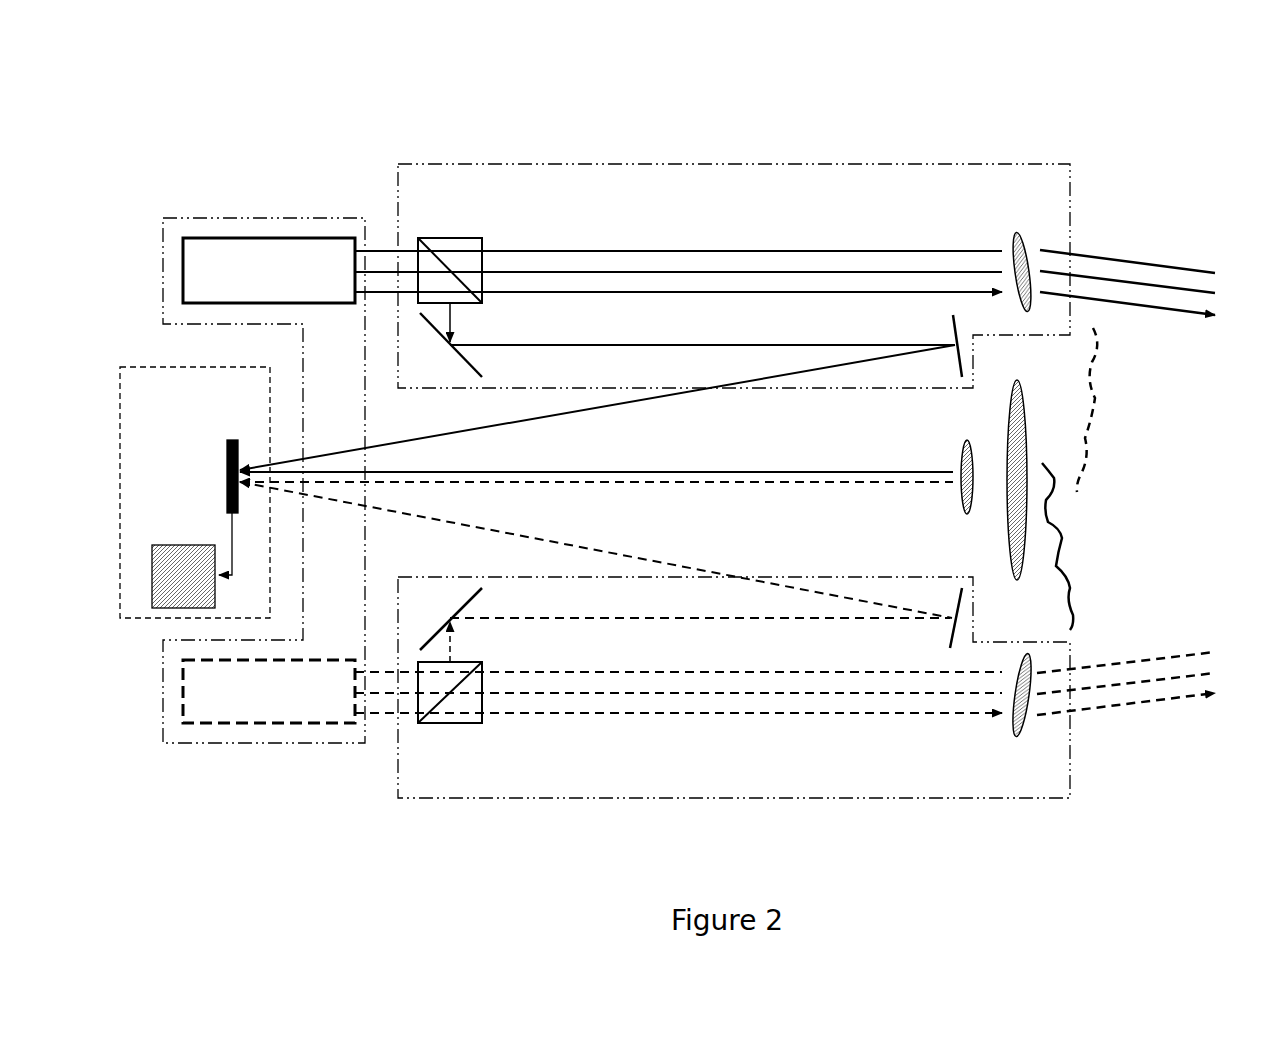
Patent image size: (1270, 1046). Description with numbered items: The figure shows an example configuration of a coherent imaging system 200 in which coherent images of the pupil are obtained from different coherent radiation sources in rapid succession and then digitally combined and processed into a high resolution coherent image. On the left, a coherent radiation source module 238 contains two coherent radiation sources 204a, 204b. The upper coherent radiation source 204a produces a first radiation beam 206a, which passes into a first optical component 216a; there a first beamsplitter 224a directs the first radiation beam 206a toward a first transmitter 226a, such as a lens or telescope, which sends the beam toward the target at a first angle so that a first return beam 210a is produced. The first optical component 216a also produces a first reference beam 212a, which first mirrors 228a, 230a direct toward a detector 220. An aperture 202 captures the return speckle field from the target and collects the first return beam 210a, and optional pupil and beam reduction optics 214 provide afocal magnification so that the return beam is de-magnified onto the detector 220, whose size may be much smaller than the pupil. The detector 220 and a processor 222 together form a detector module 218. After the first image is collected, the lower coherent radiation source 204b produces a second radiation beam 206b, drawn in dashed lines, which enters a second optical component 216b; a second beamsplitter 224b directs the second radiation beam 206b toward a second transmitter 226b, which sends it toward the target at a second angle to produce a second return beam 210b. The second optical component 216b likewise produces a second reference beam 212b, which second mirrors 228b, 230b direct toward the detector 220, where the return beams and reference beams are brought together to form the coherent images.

The coherent imaging system 200 is at (954, 131).
The aperture 202 is at (1017, 580).
The coherent radiation source 204a is at (269, 270).
The coherent radiation source 204b is at (269, 691).
The first radiation beam 206a is at (718, 248).
The second radiation beam 206b is at (750, 713).
The first return beam 210a is at (728, 470).
The second return beam 210b is at (686, 482).
The first reference beam 212a is at (588, 408).
The second reference beam 212b is at (607, 618).
The pupil and beam reduction optics 214 is at (1005, 546).
The first optical component 216a is at (558, 164).
The second optical component 216b is at (545, 798).
The detector module 218 is at (142, 367).
The detector 220 is at (232, 434).
The processor 222 is at (183, 576).
The first beamsplitter 224a is at (455, 238).
The second beamsplitter 224b is at (455, 725).
The first transmitter 226a is at (1028, 228).
The second transmitter 226b is at (1027, 737).
The first mirror 228a is at (430, 335).
The second mirror 228b is at (440, 630).
The first mirror 230a is at (950, 322).
The second mirror 230b is at (953, 648).
The coherent radiation source module 238 is at (185, 218).